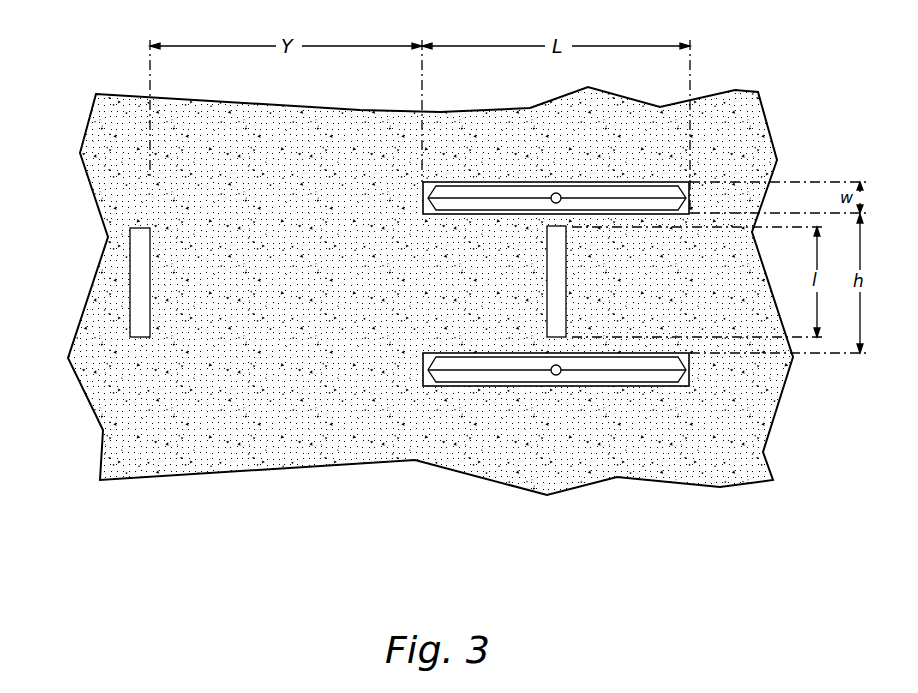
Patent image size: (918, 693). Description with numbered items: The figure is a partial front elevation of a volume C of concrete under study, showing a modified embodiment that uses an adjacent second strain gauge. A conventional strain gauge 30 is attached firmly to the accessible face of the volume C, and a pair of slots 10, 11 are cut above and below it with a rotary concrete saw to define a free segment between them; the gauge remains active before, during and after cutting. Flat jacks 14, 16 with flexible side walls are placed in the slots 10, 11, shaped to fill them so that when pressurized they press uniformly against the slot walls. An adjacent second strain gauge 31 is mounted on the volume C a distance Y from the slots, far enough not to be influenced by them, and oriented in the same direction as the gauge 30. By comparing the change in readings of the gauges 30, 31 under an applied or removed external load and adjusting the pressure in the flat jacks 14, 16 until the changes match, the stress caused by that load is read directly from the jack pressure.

The slot 10 is at (683, 206).
The slot 11 is at (680, 386).
The flat jack 14 is at (487, 195).
The flat jack 16 is at (467, 378).
The strain gauge 30 is at (563, 288).
The adjacent second strain gauge 31 is at (139, 261).
The volume of concrete C is at (750, 429).